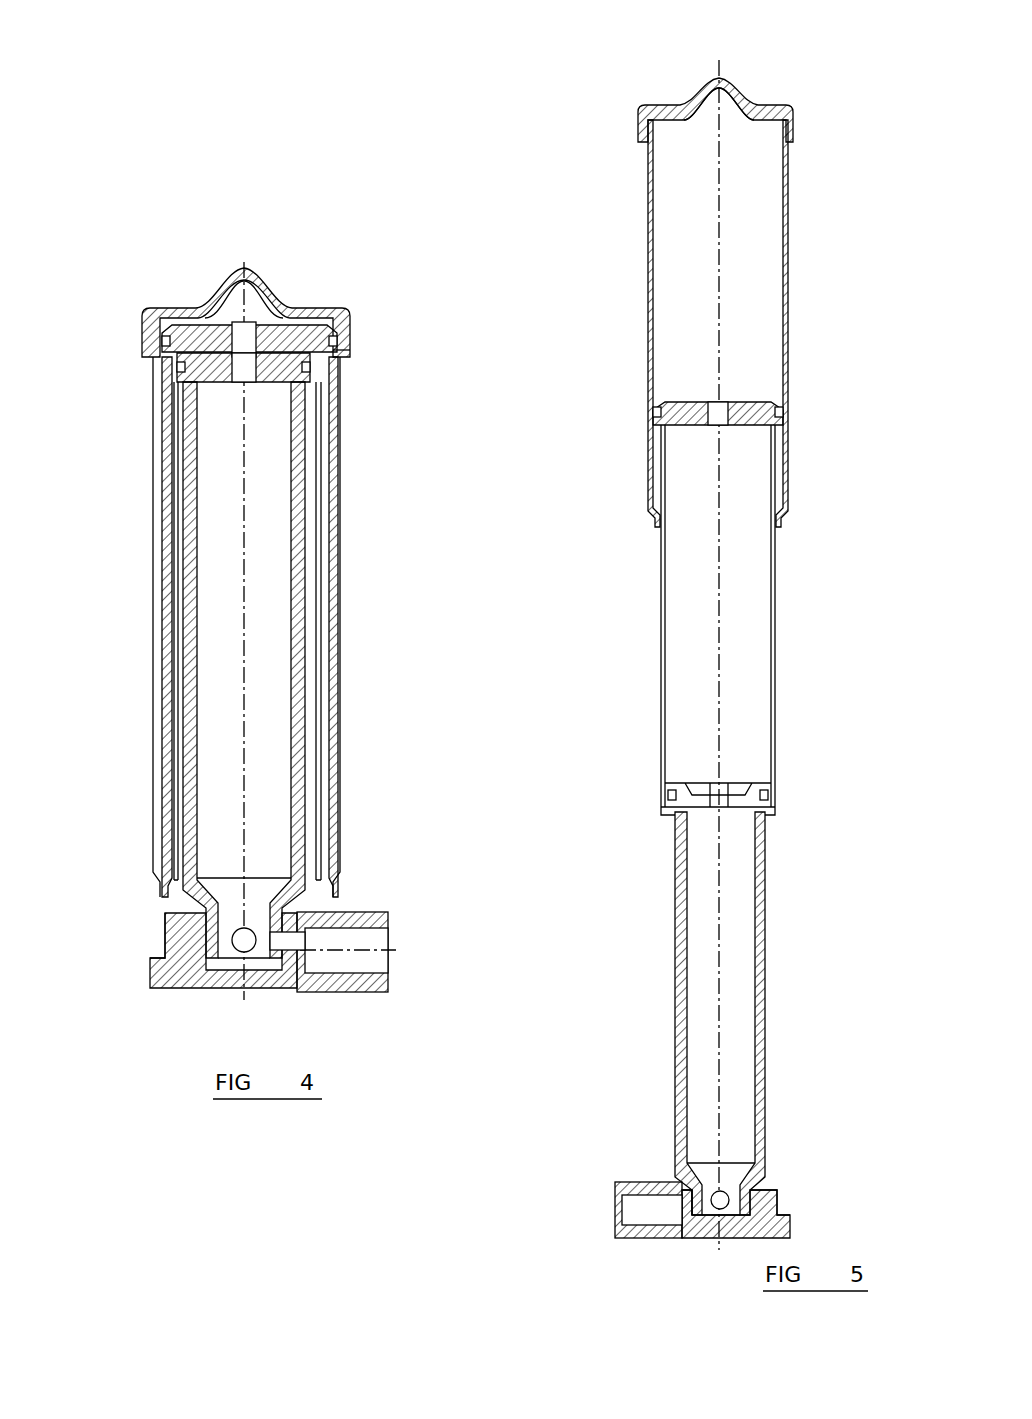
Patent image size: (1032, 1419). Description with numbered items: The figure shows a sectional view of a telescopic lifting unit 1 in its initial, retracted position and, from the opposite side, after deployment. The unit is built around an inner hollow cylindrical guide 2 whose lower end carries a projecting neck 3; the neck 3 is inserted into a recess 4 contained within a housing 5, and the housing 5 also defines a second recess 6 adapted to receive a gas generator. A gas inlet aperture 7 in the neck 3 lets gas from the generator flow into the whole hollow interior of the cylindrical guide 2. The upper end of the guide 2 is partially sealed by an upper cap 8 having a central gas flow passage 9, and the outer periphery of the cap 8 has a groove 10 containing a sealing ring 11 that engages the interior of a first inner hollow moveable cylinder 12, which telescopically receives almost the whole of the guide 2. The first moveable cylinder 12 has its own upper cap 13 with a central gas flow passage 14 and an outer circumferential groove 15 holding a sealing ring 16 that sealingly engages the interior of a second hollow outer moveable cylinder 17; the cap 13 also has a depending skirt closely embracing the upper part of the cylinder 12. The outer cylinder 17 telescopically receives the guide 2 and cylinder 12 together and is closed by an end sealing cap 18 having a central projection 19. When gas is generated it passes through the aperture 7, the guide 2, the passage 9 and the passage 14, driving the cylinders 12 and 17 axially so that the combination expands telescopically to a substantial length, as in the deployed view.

In FIG. 4, the lifting unit 1 is at (131, 556).
In FIG. 5, the lifting unit 1 is at (867, 690).
In FIG. 4, the inner hollow cylindrical guide 2 is at (306, 576).
In FIG. 5, the inner hollow cylindrical guide 2 is at (766, 1000).
In FIG. 4, the projecting neck 3 is at (292, 934).
In FIG. 5, the projecting neck 3 is at (781, 1212).
In FIG. 4, the recess 4 is at (160, 932).
In FIG. 5, the recess 4 is at (687, 1196).
In FIG. 4, the housing 5 is at (178, 973).
In FIG. 5, the housing 5 is at (641, 1241).
In FIG. 4, the second recess 6 is at (346, 972).
In FIG. 5, the second recess 6 is at (642, 1214).
In FIG. 4, the gas inlet aperture 7 is at (252, 934).
In FIG. 5, the gas inlet aperture 7 is at (727, 1196).
In FIG. 4, the upper cap 8 is at (268, 378).
In FIG. 5, the upper cap 8 is at (753, 812).
In FIG. 4, the central gas flow passage 9 is at (248, 390).
In FIG. 5, the central gas flow passage 9 is at (724, 786).
In FIG. 4, the groove 10 is at (185, 372).
In FIG. 4, the sealing ring 11 is at (178, 356).
In FIG. 5, the sealing ring 11 is at (773, 797).
In FIG. 4, the first inner hollow moveable cylinder 12 is at (318, 666).
In FIG. 5, the first inner hollow moveable cylinder 12 is at (776, 640).
In FIG. 4, the upper cap 13 is at (306, 335).
In FIG. 5, the upper cap 13 is at (748, 405).
In FIG. 4, the central gas flow passage 14 is at (258, 330).
In FIG. 5, the central gas flow passage 14 is at (727, 428).
In FIG. 4, the outer circumferential groove 15 is at (350, 357).
In FIG. 4, the sealing ring 16 is at (342, 347).
In FIG. 5, the sealing ring 16 is at (786, 415).
In FIG. 4, the second hollow outer moveable cylinder 17 is at (340, 396).
In FIG. 5, the second hollow outer moveable cylinder 17 is at (790, 290).
In FIG. 4, the end sealing cap 18 is at (168, 308).
In FIG. 5, the end sealing cap 18 is at (792, 110).
In FIG. 4, the central projection 19 is at (246, 280).
In FIG. 5, the central projection 19 is at (734, 80).